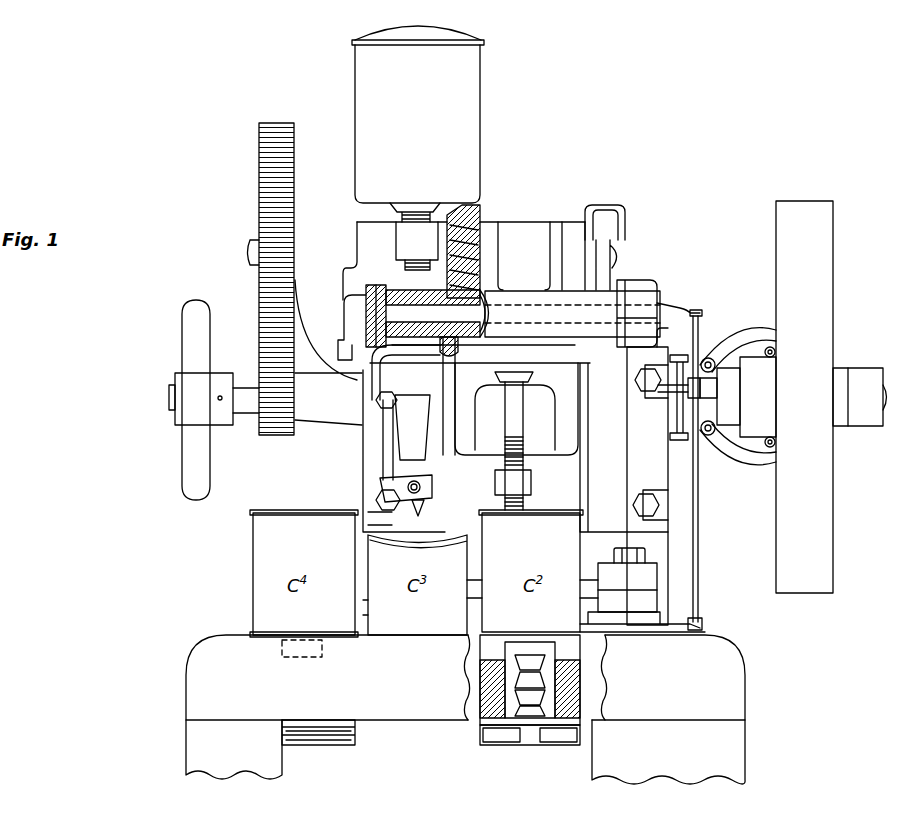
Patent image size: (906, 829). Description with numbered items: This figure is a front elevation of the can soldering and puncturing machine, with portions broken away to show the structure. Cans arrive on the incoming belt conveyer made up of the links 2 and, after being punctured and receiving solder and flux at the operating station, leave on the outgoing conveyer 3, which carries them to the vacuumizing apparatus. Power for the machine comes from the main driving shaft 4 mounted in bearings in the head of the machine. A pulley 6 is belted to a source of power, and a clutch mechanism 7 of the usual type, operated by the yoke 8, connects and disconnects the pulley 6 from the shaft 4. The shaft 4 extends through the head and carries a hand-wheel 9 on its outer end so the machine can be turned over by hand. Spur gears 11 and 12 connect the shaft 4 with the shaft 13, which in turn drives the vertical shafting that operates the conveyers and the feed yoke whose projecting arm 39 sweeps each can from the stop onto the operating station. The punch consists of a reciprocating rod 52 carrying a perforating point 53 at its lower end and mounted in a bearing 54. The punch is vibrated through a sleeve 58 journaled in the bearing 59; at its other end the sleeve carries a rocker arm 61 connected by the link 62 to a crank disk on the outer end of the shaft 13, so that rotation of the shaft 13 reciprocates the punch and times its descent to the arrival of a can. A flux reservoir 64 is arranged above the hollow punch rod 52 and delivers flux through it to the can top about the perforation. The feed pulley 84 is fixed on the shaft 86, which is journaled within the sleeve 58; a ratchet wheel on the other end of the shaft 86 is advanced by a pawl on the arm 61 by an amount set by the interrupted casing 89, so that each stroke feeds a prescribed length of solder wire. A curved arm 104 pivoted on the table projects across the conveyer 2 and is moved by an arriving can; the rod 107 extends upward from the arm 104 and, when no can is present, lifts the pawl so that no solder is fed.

The belt conveyer links 2 is at (540, 745).
The outgoing conveyer 3 is at (312, 740).
The main driving shaft 4 is at (535, 400).
The pulley 6 is at (831, 397).
The clutch mechanism 7 is at (760, 450).
The yoke 8 is at (697, 400).
The hand-wheel 9 is at (190, 322).
The spur gear 11 is at (282, 435).
The spur gear 12 is at (270, 188).
The shaft 13 is at (398, 246).
The feed yoke arm 39 is at (590, 592).
The reciprocating punch rod 52 is at (418, 465).
The perforating point 53 is at (418, 516).
The bearing 54 is at (406, 372).
The sleeve 58 is at (458, 338).
The bearing 59 is at (572, 314).
The rocker arm 61 is at (607, 272).
The link 62 is at (608, 205).
The flux reservoir 64 is at (418, 124).
The feed pulley 84 is at (366, 300).
The shaft 86 is at (437, 313).
The interrupted casing 89 is at (637, 297).
The curved arm 104 is at (638, 630).
The rod 107 is at (698, 538).